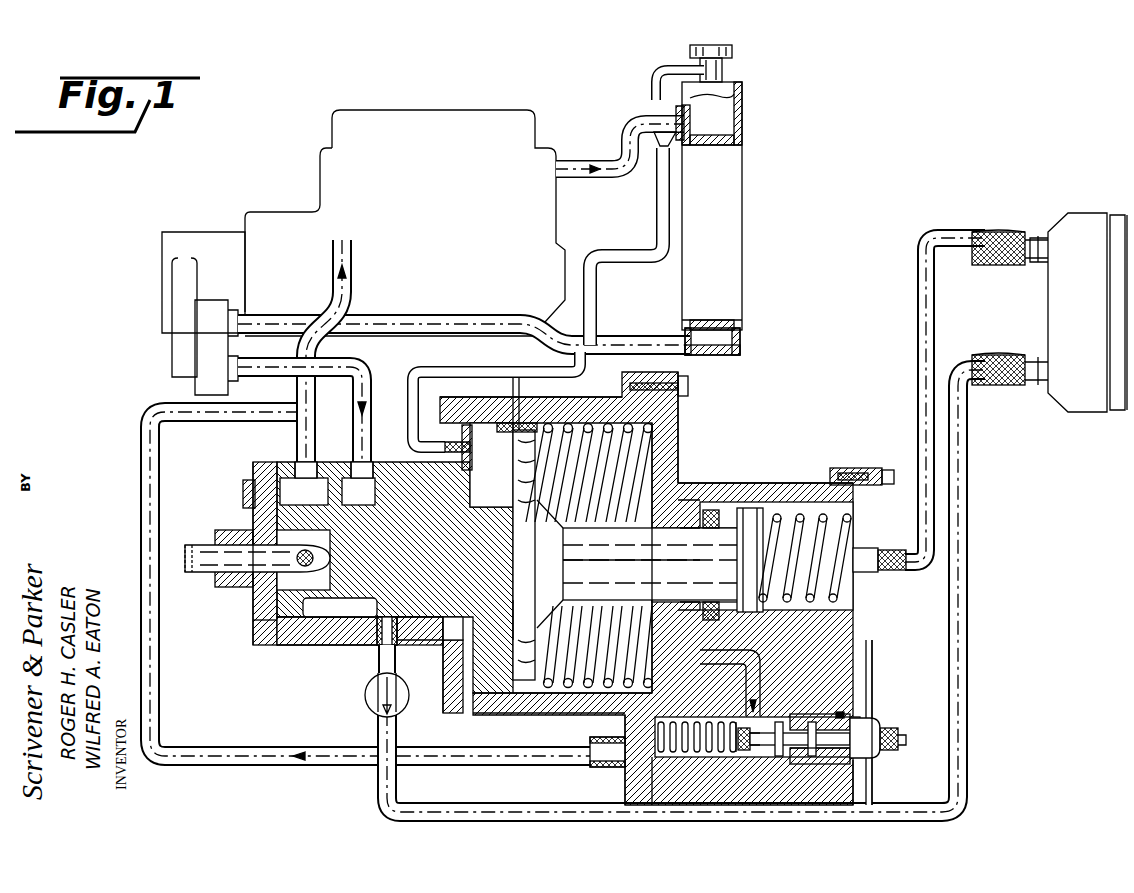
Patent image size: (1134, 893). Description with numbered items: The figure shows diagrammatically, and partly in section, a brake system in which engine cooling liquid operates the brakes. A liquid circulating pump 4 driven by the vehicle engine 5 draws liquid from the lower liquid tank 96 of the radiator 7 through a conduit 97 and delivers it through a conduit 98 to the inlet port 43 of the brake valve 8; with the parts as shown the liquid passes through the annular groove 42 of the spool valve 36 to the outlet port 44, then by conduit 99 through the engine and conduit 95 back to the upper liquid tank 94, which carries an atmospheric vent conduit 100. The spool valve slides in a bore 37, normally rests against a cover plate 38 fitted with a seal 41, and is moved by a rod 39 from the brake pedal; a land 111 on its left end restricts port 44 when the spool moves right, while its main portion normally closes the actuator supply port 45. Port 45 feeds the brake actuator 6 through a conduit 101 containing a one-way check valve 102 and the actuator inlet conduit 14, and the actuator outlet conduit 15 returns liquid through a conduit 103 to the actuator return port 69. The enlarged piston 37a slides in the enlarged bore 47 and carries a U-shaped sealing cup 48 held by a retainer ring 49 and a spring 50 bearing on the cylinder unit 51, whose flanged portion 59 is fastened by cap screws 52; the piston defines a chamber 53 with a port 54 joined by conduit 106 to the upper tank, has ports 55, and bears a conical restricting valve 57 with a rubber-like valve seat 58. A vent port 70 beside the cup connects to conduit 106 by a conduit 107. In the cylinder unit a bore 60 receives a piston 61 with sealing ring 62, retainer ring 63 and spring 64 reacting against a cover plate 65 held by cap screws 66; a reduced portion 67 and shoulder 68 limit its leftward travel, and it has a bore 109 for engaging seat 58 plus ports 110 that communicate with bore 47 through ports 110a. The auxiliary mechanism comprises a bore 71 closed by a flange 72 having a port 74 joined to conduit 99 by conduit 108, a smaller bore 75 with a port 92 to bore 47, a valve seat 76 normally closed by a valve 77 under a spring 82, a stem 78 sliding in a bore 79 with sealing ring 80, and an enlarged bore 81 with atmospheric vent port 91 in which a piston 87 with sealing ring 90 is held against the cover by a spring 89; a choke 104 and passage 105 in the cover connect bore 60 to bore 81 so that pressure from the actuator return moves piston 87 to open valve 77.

The liquid circulating pump 4 is at (198, 387).
The vehicle engine 5 is at (465, 114).
The brake actuator 6 is at (1049, 299).
The heat exchanger or engine radiator 7 is at (688, 200).
The brake valve 8 is at (557, 589).
The inlet conduit 14 is at (1030, 388).
The outlet conduit 15 is at (1035, 258).
The spool valve 36 is at (296, 625).
The bore 37 is at (326, 625).
The enlarged piston 37a is at (410, 701).
The cover plate 38 is at (256, 640).
The rod or control element 39 is at (200, 553).
The seal 41 is at (240, 588).
The annular groove 42 is at (354, 617).
The inlet port 43 is at (376, 470).
The outlet port 44 is at (322, 470).
The actuator supply port 45 is at (394, 640).
The enlarged bore 47 is at (574, 700).
The U-shaped flexible sealing cup 48 is at (511, 705).
The retainer ring 49 is at (530, 427).
The spring 50 is at (568, 447).
The cylinder unit 51 is at (692, 462).
The cap screws 52 is at (688, 387).
The chamber 53 is at (456, 681).
The port 54 is at (442, 450).
The ports 55 is at (497, 426).
The conical restricting valve 57 is at (516, 518).
The valve seat 58 is at (532, 540).
The flanged portion 59 is at (680, 420).
The bore 60 is at (803, 483).
The piston 61 is at (700, 500).
The U-shaped sealing ring 62 is at (748, 505).
The annular retainer ring 63 is at (775, 522).
The spring 64 is at (820, 522).
The cover plate 65 is at (863, 470).
The cap screws 66 is at (888, 478).
The portion of reduced diameter 67 is at (516, 602).
The shoulder 68 is at (690, 500).
The actuator return port 69 is at (892, 573).
The vent port 70 is at (519, 410).
The bore 71 is at (693, 775).
The flange 72 is at (622, 790).
The port 74 is at (604, 750).
The smaller bore 75 is at (775, 762).
The valve seat 76 is at (755, 768).
The valve 77 is at (728, 768).
The stem 78 is at (790, 738).
The bore 79 is at (795, 725).
The sealing ring 80 is at (818, 730).
The enlarged bore 81 is at (816, 766).
The spring 82 is at (695, 718).
The piston 87 is at (878, 775).
The spring 89 is at (868, 720).
The sealing ring 90 is at (838, 712).
The atmospheric vent port 91 is at (800, 766).
The port 92 is at (745, 690).
The upper liquid tank 94 is at (738, 105).
The conduit 95 is at (566, 165).
The lower liquid tank 96 is at (742, 346).
The conduit 97 is at (614, 340).
The conduit 98 is at (368, 380).
The conduit 99 is at (352, 283).
The atmospheric vent conduit 100 is at (652, 78).
The conduit 101 is at (966, 582).
The one-way check valve 102 is at (364, 696).
The conduit 103 is at (930, 318).
The choke 104 is at (882, 745).
The passage 105 is at (878, 646).
The conduit 106 is at (597, 283).
The conduit 107 is at (517, 380).
The conduit 108 is at (190, 750).
The bore 109 is at (620, 560).
The ports 110 is at (715, 507).
The ports 110a is at (631, 551).
The land 111 is at (254, 625).